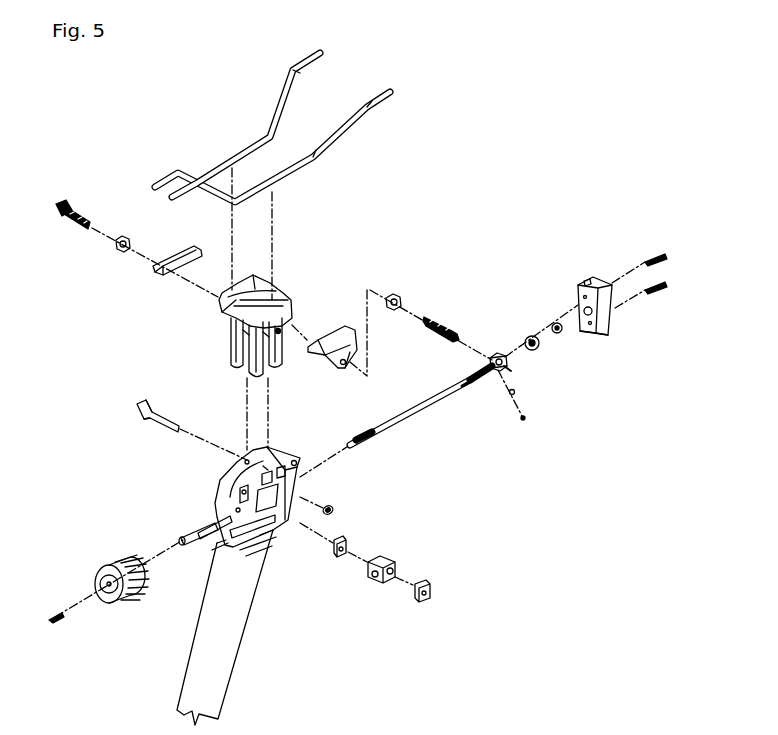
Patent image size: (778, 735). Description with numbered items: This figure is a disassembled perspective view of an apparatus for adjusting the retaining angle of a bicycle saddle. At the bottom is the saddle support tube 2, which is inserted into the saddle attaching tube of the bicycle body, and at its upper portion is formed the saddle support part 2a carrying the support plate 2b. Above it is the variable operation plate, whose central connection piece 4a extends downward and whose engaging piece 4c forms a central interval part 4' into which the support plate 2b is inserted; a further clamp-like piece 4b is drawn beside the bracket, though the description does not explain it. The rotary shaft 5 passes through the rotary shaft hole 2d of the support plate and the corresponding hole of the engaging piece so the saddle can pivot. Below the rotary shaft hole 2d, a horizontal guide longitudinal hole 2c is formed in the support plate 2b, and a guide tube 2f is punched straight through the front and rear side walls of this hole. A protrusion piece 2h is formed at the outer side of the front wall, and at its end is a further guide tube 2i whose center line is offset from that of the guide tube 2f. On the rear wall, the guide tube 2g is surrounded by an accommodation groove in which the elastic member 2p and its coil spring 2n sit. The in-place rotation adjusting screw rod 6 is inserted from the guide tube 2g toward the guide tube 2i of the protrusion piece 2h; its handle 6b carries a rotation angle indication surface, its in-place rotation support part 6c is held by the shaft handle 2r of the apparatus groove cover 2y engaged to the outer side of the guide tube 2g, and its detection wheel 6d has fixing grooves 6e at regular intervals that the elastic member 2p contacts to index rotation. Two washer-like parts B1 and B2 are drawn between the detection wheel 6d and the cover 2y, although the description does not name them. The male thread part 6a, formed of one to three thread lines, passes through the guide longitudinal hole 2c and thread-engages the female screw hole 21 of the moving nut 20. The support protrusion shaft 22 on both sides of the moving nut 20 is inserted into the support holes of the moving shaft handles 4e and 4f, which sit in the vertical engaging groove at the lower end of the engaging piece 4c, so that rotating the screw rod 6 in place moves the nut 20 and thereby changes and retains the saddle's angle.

The saddle support tube 2 is at (230, 627).
The saddle support part 2a is at (227, 487).
The support plate 2b is at (247, 460).
The guide longitudinal hole 2c is at (268, 545).
The rotary shaft hole 2d is at (263, 468).
The guide tube 2f is at (200, 505).
The guide tube of the rear end side wall 2g is at (307, 497).
The protrusion piece 2h is at (212, 552).
The guide tube of the protrusion piece 2i is at (188, 532).
The coil spring 2n is at (524, 420).
The elastic member 2p is at (516, 393).
The shaft handle 2r is at (578, 300).
The apparatus groove cover 2y is at (608, 325).
The interval part 4' is at (216, 347).
The central connection piece 4a is at (258, 288).
The clamp piece 4b is at (279, 333).
The engaging piece 4c is at (231, 378).
The moving shaft handle 4e is at (423, 602).
The moving shaft handle 4f is at (340, 558).
The rotary shaft 5 is at (138, 418).
The in-place rotation adjusting screw rod 6 is at (425, 408).
The male thread part 6a is at (478, 376).
The handle 6b is at (98, 568).
The in-place rotation support part 6c is at (508, 366).
The detection wheel 6d is at (503, 357).
The fixing groove 6e is at (496, 358).
The moving nut 20 is at (388, 583).
The female screw hole 21 is at (373, 580).
The support protrusion shaft 22 is at (395, 562).
The washer B1 is at (537, 350).
The washer B2 is at (560, 337).